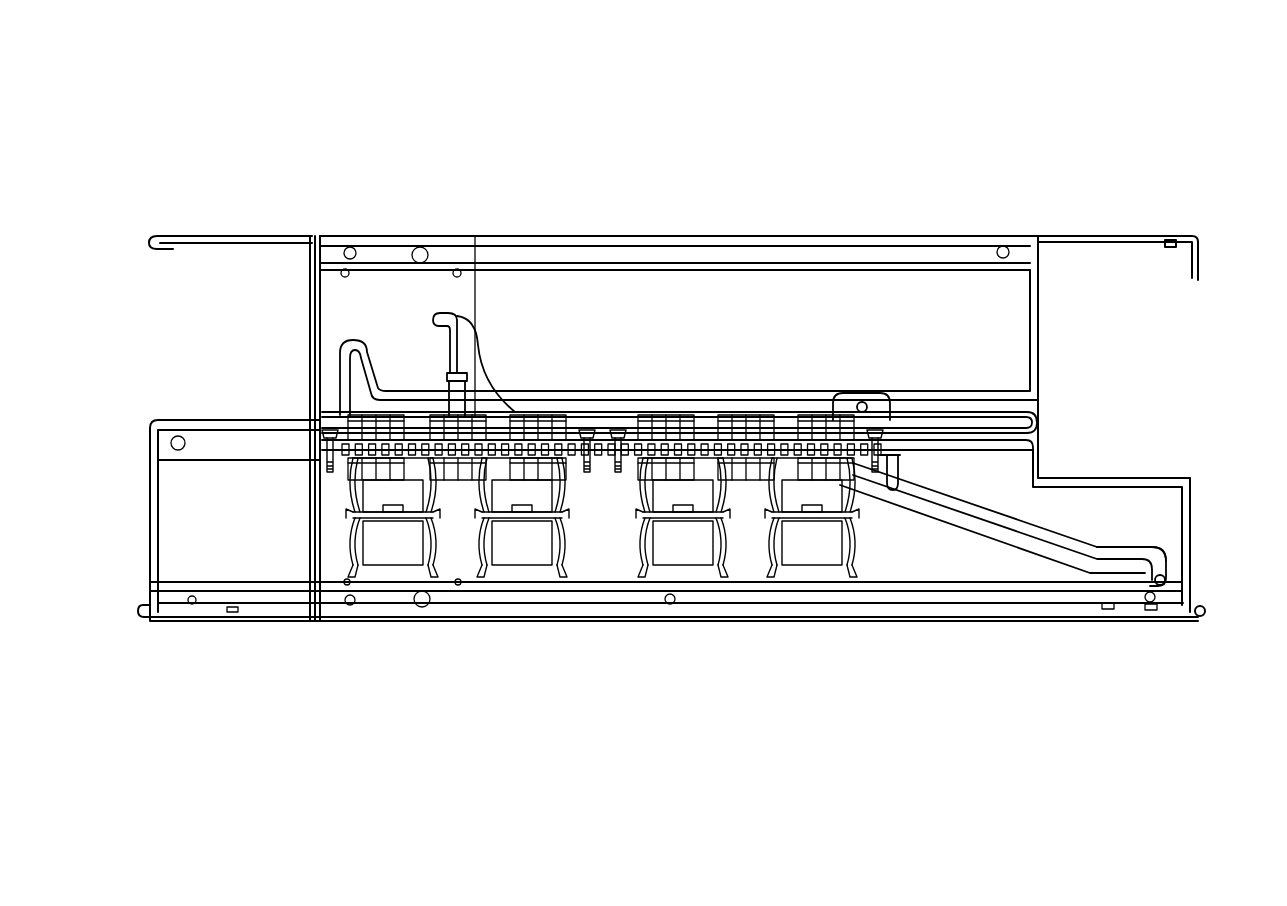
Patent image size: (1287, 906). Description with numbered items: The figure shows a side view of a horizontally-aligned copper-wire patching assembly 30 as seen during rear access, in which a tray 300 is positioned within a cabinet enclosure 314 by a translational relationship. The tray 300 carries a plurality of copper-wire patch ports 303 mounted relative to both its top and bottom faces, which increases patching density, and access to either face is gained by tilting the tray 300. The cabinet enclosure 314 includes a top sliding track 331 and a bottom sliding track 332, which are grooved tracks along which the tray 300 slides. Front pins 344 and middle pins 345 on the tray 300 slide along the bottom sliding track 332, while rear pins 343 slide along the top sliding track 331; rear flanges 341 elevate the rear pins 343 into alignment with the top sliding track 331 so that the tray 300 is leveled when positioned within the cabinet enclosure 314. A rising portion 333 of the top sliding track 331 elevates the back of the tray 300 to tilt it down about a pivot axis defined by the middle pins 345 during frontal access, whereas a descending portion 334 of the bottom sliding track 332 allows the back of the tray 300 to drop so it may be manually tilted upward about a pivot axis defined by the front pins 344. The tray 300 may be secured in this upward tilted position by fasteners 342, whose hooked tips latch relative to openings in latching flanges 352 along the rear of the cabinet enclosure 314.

The horizontally-aligned copper-wire patching assembly 30 is at (150, 94).
The tray 300 is at (303, 413).
The copper-wire patch ports 303 is at (357, 466).
The cabinet enclosure 314 is at (683, 220).
The top sliding track 331 is at (930, 403).
The bottom sliding track 332 is at (977, 440).
The rising portion 333 is at (356, 362).
The descending portion 334 is at (1078, 555).
The rear flanges 341 is at (875, 407).
The fasteners 342 is at (466, 342).
The rear pins 343 is at (856, 404).
The front pins 344 is at (171, 445).
The middle pins 345 is at (657, 450).
The latching flanges 352 is at (1197, 262).